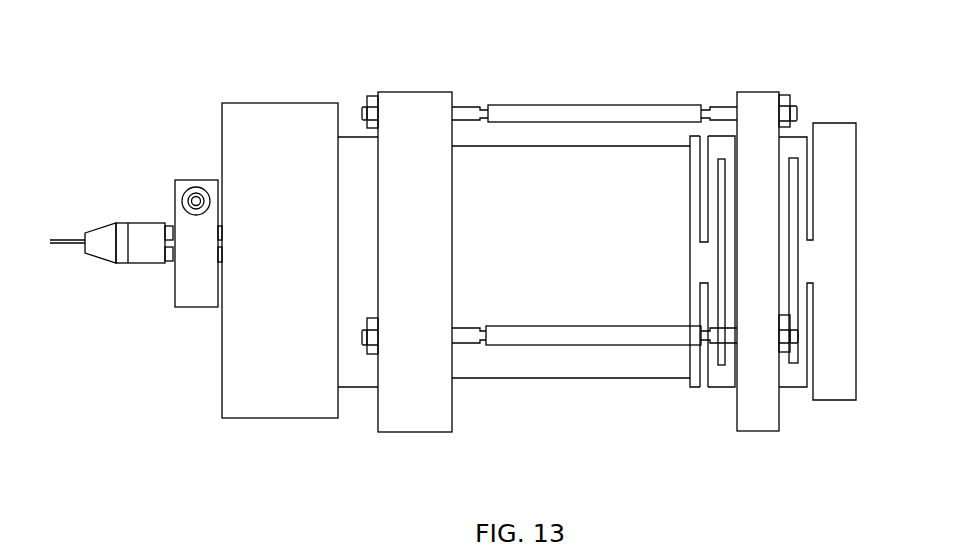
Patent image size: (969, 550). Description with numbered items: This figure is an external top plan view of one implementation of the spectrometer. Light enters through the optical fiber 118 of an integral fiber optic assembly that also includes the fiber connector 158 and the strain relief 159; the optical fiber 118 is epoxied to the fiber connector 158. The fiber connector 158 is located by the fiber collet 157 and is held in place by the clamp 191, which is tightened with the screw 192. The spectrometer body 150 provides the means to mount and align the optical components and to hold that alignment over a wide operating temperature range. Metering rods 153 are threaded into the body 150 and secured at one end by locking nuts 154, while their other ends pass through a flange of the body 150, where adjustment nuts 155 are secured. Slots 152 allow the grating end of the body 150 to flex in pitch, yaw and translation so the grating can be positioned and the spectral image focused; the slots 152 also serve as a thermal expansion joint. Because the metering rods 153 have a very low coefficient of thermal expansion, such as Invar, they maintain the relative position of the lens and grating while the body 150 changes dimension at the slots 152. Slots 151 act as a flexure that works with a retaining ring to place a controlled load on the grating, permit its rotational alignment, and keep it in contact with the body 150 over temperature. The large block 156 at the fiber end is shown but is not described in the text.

The optical fiber 118 is at (63, 243).
The spectrometer body 150 is at (427, 92).
The slots 151 is at (802, 388).
The slots 152 is at (698, 388).
The metering rods 153 is at (540, 105).
The locking nuts 154 is at (369, 95).
The adjustment nuts 155 is at (790, 94).
The actuator block 156 is at (233, 103).
The fiber collet 157 is at (168, 225).
The fiber connector 158 is at (152, 264).
The strain relief 159 is at (117, 264).
The clamp 191 is at (196, 187).
The screw 192 is at (193, 194).